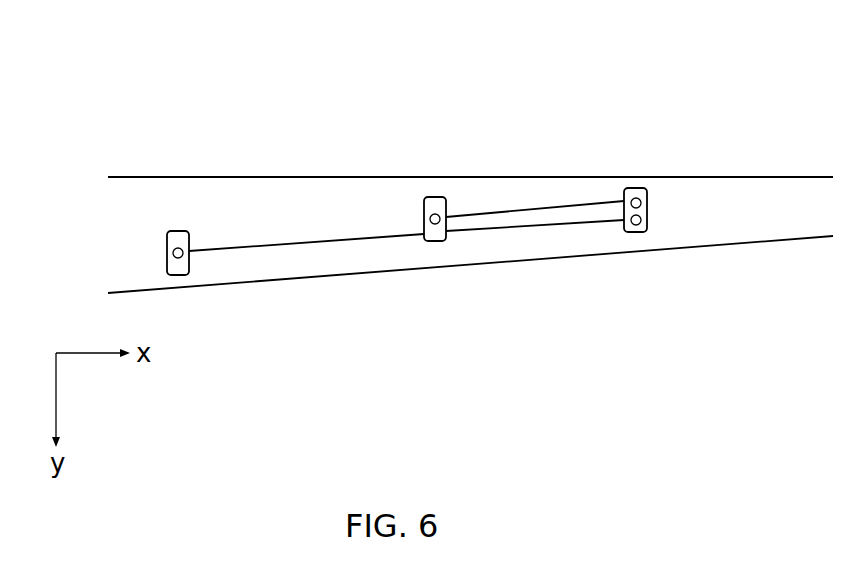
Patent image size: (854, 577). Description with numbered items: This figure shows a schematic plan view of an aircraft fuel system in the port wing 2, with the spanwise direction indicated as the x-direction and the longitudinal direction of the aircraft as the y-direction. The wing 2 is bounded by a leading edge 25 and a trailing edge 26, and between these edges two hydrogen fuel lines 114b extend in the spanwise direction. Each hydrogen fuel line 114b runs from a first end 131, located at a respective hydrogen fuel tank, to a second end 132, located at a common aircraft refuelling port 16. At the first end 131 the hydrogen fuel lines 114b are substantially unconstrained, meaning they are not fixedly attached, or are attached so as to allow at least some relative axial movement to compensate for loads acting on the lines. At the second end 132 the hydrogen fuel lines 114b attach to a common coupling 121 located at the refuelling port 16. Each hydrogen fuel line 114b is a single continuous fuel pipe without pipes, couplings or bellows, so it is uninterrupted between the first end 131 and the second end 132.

The port wing 2 is at (250, 103).
The trailing edge 26 is at (368, 177).
The leading edge 25 is at (410, 270).
The hydrogen fuel line 114b is at (504, 212).
The first end 131 is at (167, 251).
The second end 132 is at (640, 186).
The common coupling 121 is at (632, 190).
The aircraft refuelling port 16 is at (664, 212).